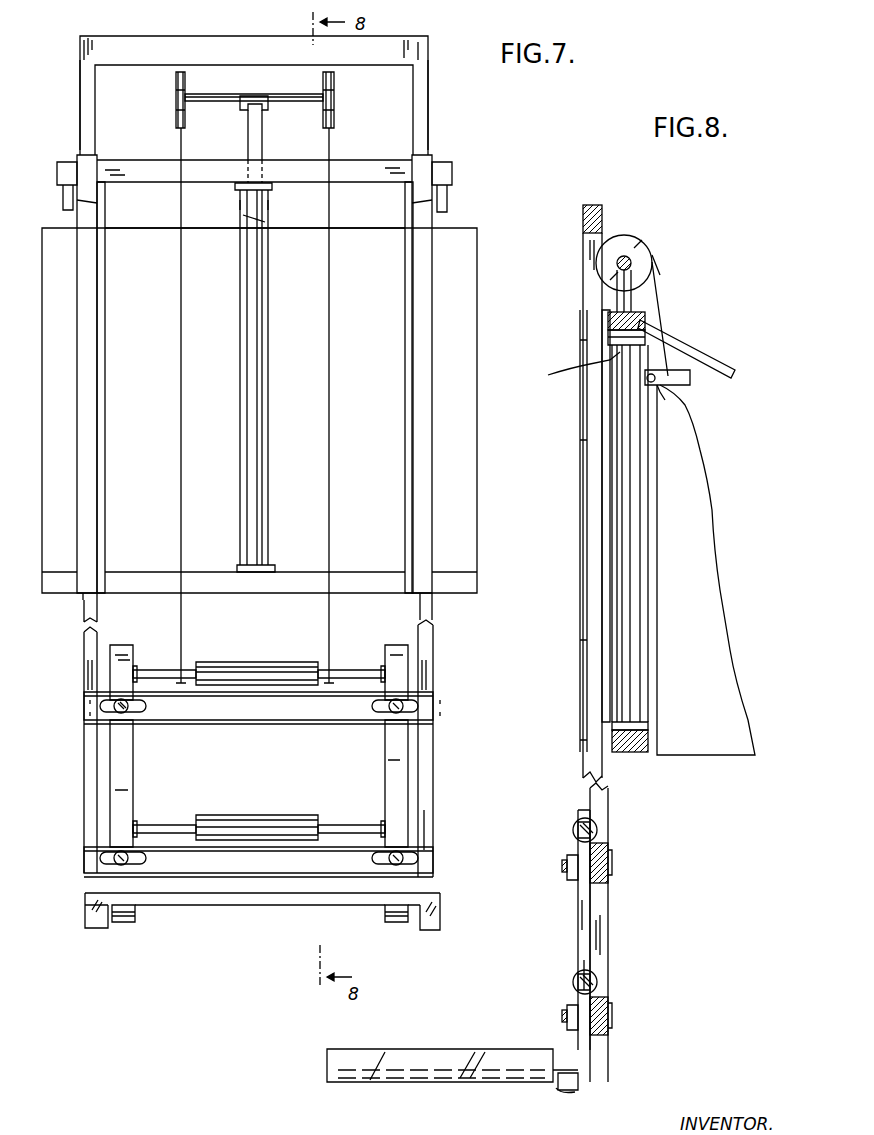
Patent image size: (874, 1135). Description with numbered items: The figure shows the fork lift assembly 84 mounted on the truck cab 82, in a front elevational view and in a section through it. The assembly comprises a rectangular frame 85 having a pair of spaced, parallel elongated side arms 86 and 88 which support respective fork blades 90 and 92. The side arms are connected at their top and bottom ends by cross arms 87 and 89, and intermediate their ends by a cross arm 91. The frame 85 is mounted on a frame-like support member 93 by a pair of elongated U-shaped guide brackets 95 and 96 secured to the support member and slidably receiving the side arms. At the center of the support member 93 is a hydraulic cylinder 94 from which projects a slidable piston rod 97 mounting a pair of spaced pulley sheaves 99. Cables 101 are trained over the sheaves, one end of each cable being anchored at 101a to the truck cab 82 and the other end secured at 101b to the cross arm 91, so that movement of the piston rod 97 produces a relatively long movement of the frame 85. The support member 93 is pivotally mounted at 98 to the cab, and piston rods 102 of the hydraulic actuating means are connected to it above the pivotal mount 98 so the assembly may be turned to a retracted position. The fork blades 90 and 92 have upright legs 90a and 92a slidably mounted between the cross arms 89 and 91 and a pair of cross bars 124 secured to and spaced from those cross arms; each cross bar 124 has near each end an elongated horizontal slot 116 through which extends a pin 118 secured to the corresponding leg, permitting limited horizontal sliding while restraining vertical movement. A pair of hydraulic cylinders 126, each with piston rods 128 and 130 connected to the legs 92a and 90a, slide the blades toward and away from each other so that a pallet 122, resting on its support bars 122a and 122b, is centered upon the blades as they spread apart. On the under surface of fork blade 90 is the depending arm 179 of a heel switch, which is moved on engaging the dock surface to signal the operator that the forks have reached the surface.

In FIG. 7, the truck cab 82 is at (477, 444).
In FIG. 8, the truck cab 82 is at (700, 472).
In FIG. 7, the fork lift assembly 84 is at (460, 119).
In FIG. 8, the fork lift assembly 84 is at (708, 275).
In FIG. 7, the rectangular frame 85 is at (440, 89).
In FIG. 8, the rectangular frame 85 is at (580, 257).
In FIG. 7, the side arm 86 is at (413, 108).
In FIG. 7, the cross arm 87 is at (222, 40).
In FIG. 8, the cross arm 87 is at (603, 212).
In FIG. 7, the side arm 88 is at (80, 112).
In FIG. 8, the side arm 88 is at (610, 905).
In FIG. 7, the cross arm 89 is at (207, 876).
In FIG. 8, the cross arm 89 is at (610, 1005).
In FIG. 7, the fork blade 90 is at (393, 925).
In FIG. 8, the fork blade 90 is at (510, 1075).
In FIG. 7, the upright leg 90a is at (385, 764).
In FIG. 7, the cross arm 91 is at (258, 716).
In FIG. 8, the cross arm 91 is at (610, 850).
In FIG. 7, the fork blade 92 is at (122, 924).
In FIG. 7, the upright leg 92a is at (126, 782).
In FIG. 8, the upright leg 92a is at (580, 913).
In FIG. 7, the support member 93 is at (378, 182).
In FIG. 8, the support member 93 is at (646, 318).
In FIG. 7, the hydraulic cylinder 94 is at (270, 424).
In FIG. 8, the hydraulic cylinder 94 is at (645, 565).
In FIG. 7, the guide bracket 95 is at (100, 380).
In FIG. 7, the guide bracket 96 is at (413, 360).
In FIG. 7, the piston rod 97 is at (262, 152).
In FIG. 8, the piston rod 97 is at (633, 300).
In FIG. 8, the pivotal mount 98 is at (660, 392).
In FIG. 7, the pulley sheave 99 is at (176, 92).
In FIG. 8, the pulley sheave 99 is at (646, 256).
In FIG. 7, the cable 101 is at (183, 368).
In FIG. 8, the cable 101 is at (665, 332).
In FIG. 8, the cable anchor 101a is at (690, 380).
In FIG. 8, the cable securing point 101b is at (600, 833).
In FIG. 7, the piston rod 102 is at (62, 200).
In FIG. 8, the piston rod 102 is at (728, 372).
In FIG. 7, the horizontal slot 116 is at (100, 706).
In FIG. 7, the pin 118 is at (124, 712).
In FIG. 8, the pin 118 is at (562, 868).
In FIG. 7, the pallet 122 is at (241, 907).
In FIG. 8, the pallet 122 is at (319, 1067).
In FIG. 7, the support bar 122a is at (96, 930).
In FIG. 7, the support bar 122b is at (442, 920).
In FIG. 7, the cross bar 124 is at (312, 722).
In FIG. 8, the cross bar 124 is at (566, 858).
In FIG. 7, the hydraulic cylinder 126 is at (270, 662).
In FIG. 8, the hydraulic cylinder 126 is at (580, 820).
In FIG. 7, the piston rod 128 is at (156, 668).
In FIG. 7, the piston rod 130 is at (334, 670).
In FIG. 8, the piston rod 130 is at (574, 828).
In FIG. 8, the depending arm 179 is at (584, 1088).